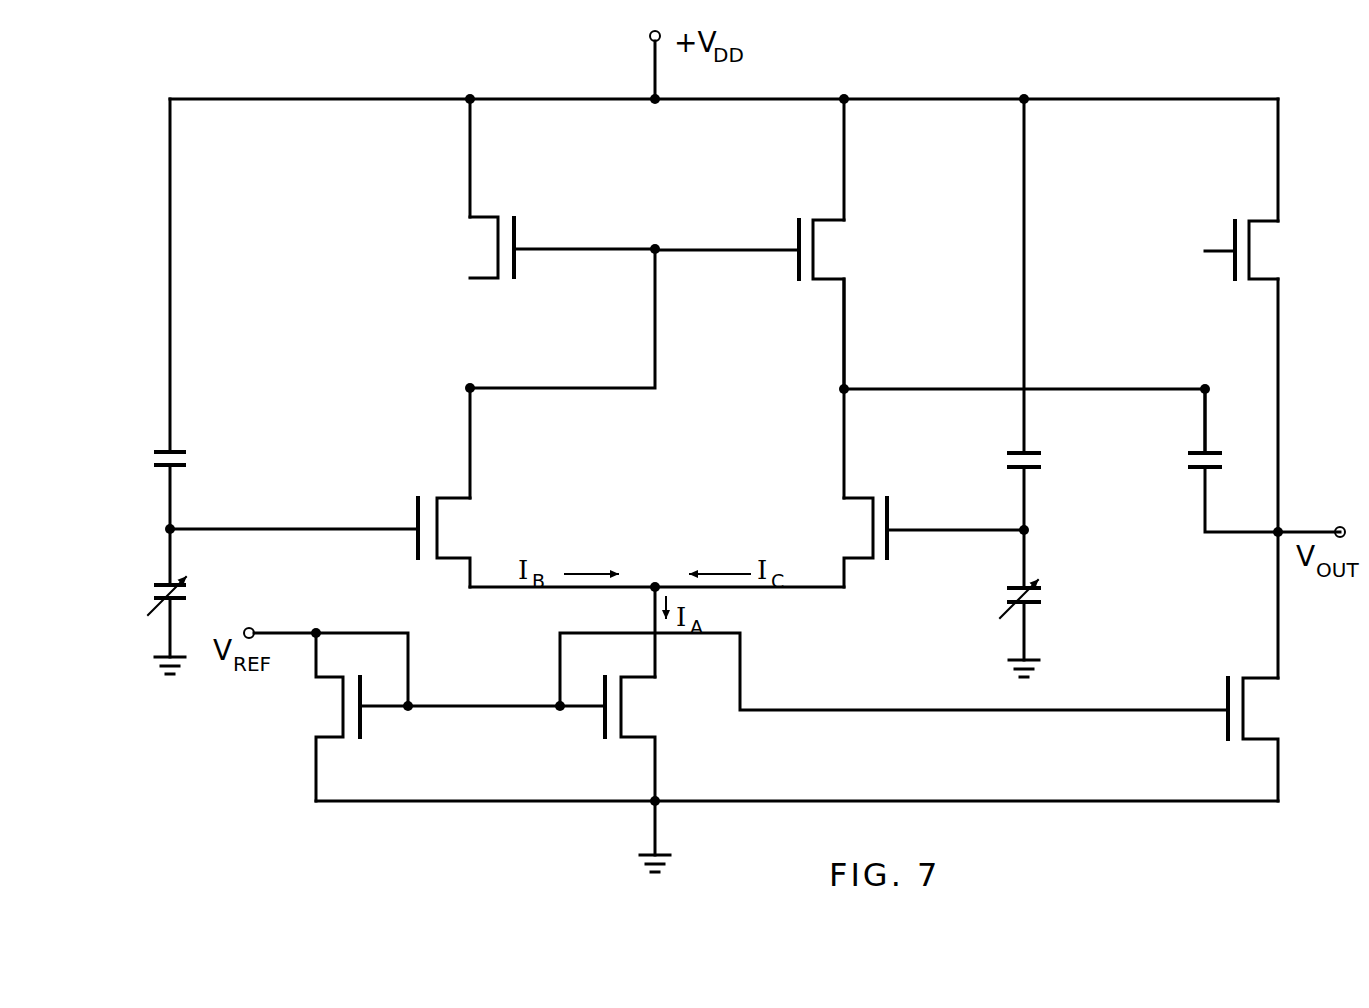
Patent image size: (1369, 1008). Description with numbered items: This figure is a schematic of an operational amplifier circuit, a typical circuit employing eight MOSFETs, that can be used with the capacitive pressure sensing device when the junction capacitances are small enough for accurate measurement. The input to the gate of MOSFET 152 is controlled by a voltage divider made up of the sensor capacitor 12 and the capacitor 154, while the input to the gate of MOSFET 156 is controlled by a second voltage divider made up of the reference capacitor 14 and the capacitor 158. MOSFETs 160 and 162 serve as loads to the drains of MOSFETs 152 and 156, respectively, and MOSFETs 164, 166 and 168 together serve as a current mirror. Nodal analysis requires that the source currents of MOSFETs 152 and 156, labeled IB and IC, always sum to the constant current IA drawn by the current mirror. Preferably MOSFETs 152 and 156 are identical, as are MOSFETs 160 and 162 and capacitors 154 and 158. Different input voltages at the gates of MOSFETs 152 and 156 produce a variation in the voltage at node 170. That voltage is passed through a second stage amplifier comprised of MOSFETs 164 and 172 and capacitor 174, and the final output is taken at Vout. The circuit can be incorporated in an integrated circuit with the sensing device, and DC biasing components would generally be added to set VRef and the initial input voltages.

The sensor capacitor 12 is at (164, 588).
The reference capacitor 14 is at (1014, 590).
The MOSFET 152 is at (445, 534).
The capacitor 154 is at (160, 453).
The MOSFET 156 is at (863, 535).
The capacitor 158 is at (1030, 454).
The MOSFET 160 is at (488, 249).
The MOSFET 162 is at (824, 250).
The MOSFET 164 is at (1254, 712).
The MOSFET 166 is at (636, 710).
The MOSFET 168 is at (335, 709).
The node 170 is at (846, 387).
The MOSFET 172 is at (1256, 254).
The capacitor 174 is at (1210, 450).